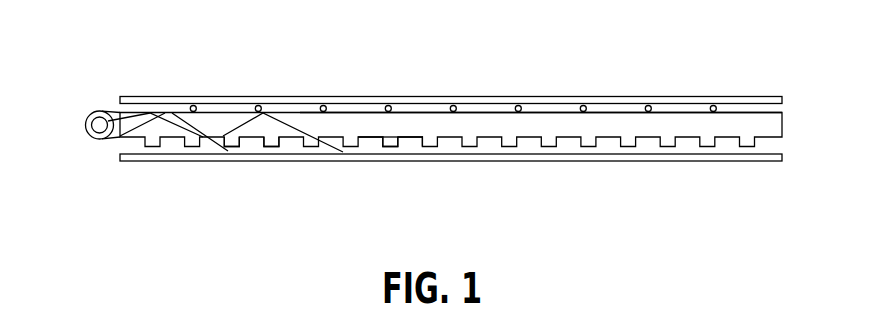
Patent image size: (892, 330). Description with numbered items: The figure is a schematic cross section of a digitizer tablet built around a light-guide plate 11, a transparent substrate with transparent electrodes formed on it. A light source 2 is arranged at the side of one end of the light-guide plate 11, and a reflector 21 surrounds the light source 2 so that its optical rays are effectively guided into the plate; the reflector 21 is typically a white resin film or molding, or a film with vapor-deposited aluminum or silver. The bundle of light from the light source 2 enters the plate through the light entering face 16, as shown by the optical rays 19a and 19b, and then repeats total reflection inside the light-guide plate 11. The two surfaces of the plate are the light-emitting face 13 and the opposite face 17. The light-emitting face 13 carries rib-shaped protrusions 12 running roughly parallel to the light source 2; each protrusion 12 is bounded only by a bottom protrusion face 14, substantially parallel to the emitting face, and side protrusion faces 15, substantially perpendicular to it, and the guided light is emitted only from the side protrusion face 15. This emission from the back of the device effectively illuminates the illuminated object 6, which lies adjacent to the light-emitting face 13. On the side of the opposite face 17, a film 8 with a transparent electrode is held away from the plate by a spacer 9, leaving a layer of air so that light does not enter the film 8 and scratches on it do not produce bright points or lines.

The light source 2 is at (100, 130).
The illuminated object 6 is at (543, 162).
The film with transparent electrode 8 is at (488, 103).
The spacer 9 is at (323, 106).
The light-guide plate 11 is at (671, 120).
The rib-shaped protrusion 12 is at (385, 140).
The light-emitting face 13 is at (255, 138).
The bottom protrusion face 14 is at (390, 143).
The side protrusion face 15 is at (397, 142).
The light entering face 16 is at (112, 111).
The opposite face 17 is at (533, 111).
The optical ray 19a is at (173, 116).
The optical ray 19b is at (206, 122).
The reflector 21 is at (86, 134).